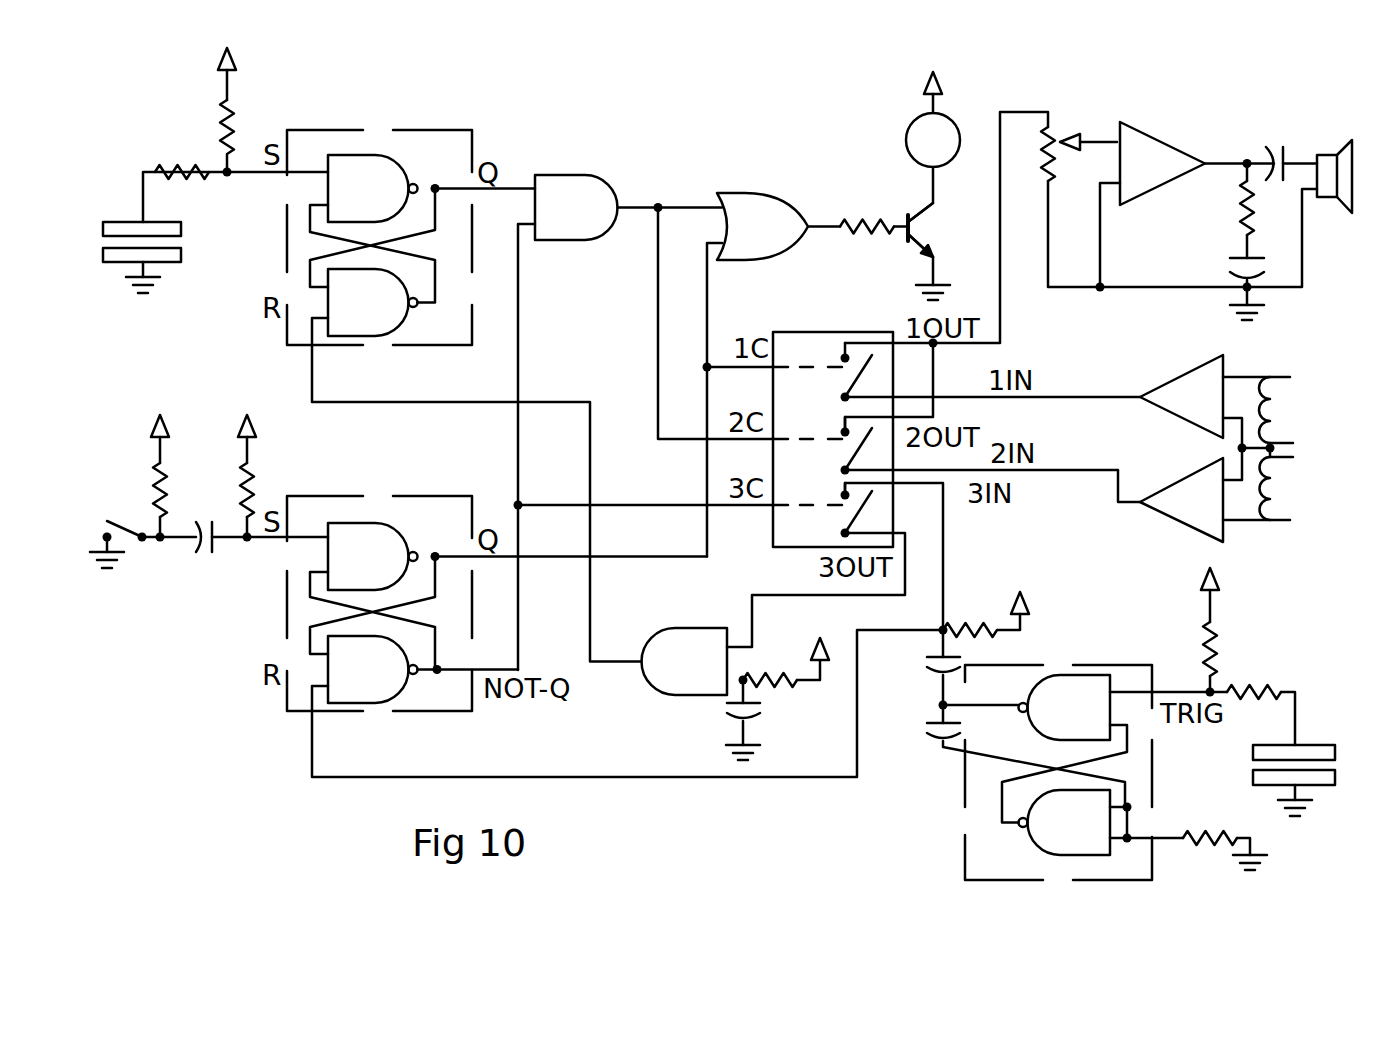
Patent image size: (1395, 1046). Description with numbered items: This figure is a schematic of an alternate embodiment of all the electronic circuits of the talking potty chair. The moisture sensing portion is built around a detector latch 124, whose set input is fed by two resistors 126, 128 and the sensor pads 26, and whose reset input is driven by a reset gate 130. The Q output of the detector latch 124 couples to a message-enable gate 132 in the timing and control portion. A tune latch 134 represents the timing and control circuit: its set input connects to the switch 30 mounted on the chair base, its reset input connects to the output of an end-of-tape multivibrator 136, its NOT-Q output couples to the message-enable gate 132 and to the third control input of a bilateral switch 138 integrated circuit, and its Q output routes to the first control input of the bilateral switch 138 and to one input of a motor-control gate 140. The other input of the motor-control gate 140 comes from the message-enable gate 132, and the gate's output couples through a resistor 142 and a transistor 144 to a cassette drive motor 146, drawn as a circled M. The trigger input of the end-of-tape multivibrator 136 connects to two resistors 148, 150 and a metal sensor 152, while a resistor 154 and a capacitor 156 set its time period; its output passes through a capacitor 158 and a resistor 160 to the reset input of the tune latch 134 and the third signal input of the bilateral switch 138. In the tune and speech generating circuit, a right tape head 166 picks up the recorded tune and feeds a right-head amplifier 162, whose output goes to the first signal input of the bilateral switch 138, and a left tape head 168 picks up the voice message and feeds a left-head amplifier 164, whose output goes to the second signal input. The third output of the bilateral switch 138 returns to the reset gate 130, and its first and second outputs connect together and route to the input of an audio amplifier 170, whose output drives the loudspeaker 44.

The sensor pads 26 is at (182, 255).
The switch 30 is at (133, 520).
The loudspeaker 44 is at (1347, 142).
The detector latch 124 is at (422, 130).
The resistor 126 is at (238, 130).
The resistor 128 is at (190, 160).
The reset gate 130 is at (668, 627).
The message-enable gate 132 is at (553, 172).
The tune latch 134 is at (418, 496).
The end-of-tape multivibrator 136 is at (1095, 665).
The bilateral switch 138 is at (813, 332).
The motor-control gate 140 is at (738, 190).
The resistor 142 is at (890, 240).
The transistor 144 is at (923, 204).
The cassette drive motor 146 is at (906, 143).
The resistor 148 is at (1218, 648).
The resistor 150 is at (1253, 680).
The metal sensor 152 is at (1253, 775).
The resistor 154 is at (1237, 827).
The capacitor 156 is at (927, 724).
The capacitor 158 is at (927, 658).
The resistor 160 is at (973, 622).
The right-head amplifier 162 is at (1183, 377).
The left-head amplifier 164 is at (1173, 517).
The right tape head 166 is at (1283, 395).
The left tape head 168 is at (1283, 500).
The audio amplifier 170 is at (1165, 140).